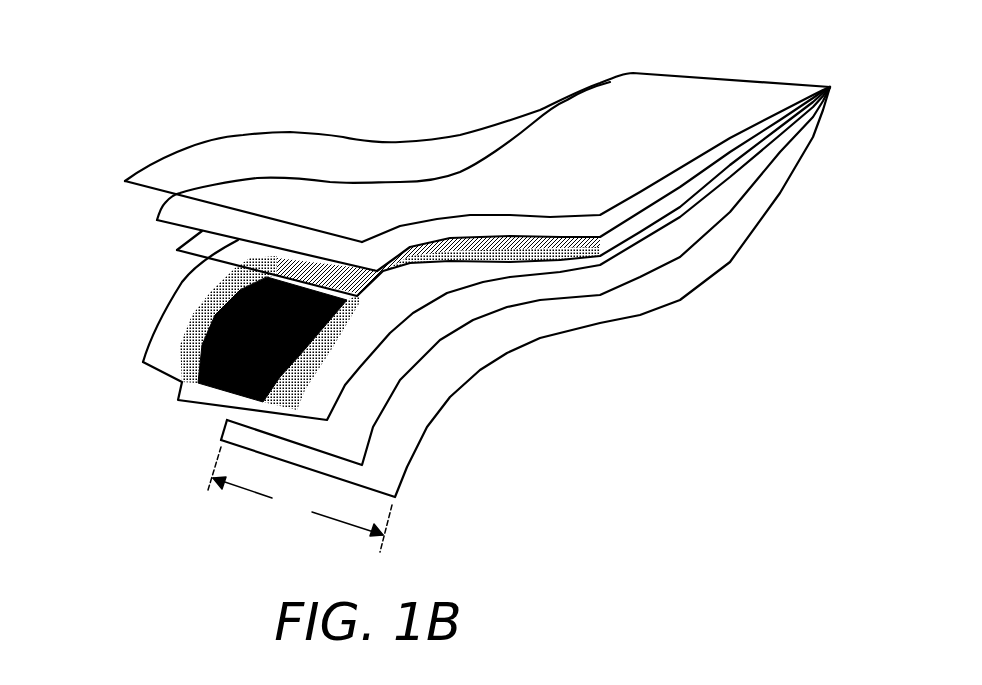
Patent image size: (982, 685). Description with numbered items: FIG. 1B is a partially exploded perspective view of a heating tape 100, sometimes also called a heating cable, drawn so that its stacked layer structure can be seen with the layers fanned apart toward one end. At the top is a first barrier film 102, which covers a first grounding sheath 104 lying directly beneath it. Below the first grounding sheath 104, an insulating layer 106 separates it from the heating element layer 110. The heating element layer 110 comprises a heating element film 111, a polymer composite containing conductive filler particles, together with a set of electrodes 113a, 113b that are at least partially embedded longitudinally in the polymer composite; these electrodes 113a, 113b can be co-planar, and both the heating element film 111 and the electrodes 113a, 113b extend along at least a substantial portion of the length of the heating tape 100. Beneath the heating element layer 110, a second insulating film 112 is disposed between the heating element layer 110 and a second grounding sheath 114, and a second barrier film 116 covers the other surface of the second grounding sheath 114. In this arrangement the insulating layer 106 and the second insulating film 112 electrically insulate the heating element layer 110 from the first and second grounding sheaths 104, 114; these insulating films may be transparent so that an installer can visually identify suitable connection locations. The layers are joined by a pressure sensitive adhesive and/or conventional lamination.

The heating tape 100 is at (170, 42).
The first barrier film 102 is at (152, 173).
The first grounding sheath 104 is at (160, 213).
The insulating layer 106 is at (176, 247).
The heating element layer 110 is at (213, 318).
The heating element film 111 is at (215, 382).
The second insulating film 112 is at (155, 347).
The electrode 113a is at (183, 360).
The electrode 113b is at (347, 318).
The second grounding sheath 114 is at (355, 442).
The second barrier film 116 is at (410, 415).